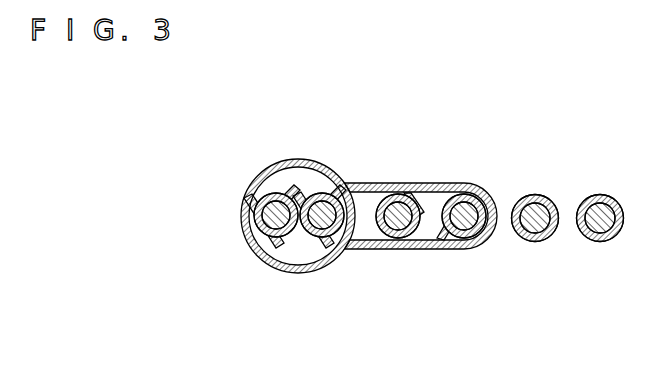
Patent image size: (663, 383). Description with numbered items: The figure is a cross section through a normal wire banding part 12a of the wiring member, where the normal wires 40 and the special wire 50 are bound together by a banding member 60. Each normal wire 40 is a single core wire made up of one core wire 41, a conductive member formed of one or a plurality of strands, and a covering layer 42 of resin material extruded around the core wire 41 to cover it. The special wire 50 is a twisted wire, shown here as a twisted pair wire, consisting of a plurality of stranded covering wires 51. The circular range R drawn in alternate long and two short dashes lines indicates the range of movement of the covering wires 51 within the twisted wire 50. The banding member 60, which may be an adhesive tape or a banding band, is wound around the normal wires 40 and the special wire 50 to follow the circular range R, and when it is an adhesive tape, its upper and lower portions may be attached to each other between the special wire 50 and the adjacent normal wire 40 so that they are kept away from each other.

The normal wire banding part 12a is at (248, 128).
The banding member 60 is at (321, 163).
The circular range R is at (358, 252).
The special wire 50 is at (295, 274).
The covering wire 51 is at (277, 242).
The normal wire 40 is at (500, 266).
The core wire 41 is at (568, 297).
The covering layer 42 is at (541, 246).